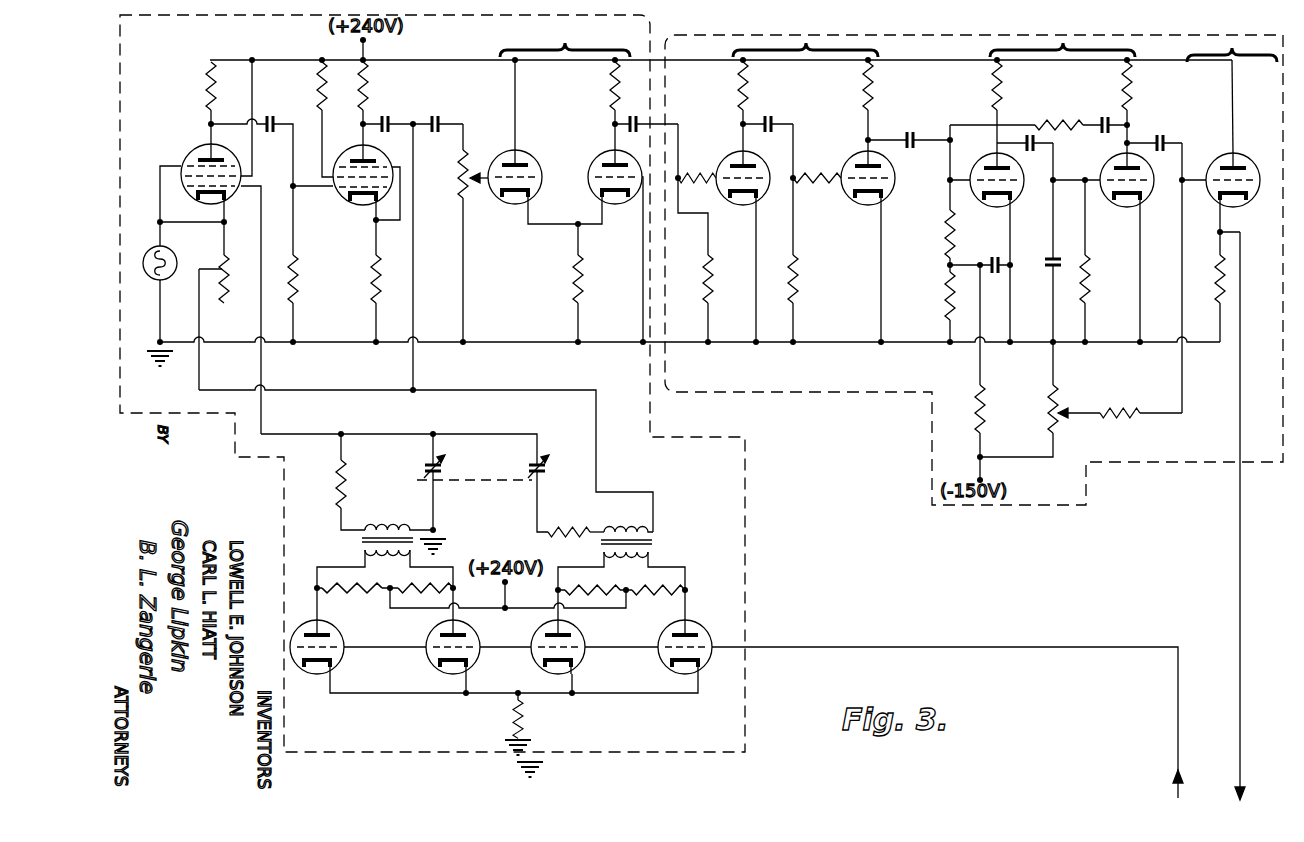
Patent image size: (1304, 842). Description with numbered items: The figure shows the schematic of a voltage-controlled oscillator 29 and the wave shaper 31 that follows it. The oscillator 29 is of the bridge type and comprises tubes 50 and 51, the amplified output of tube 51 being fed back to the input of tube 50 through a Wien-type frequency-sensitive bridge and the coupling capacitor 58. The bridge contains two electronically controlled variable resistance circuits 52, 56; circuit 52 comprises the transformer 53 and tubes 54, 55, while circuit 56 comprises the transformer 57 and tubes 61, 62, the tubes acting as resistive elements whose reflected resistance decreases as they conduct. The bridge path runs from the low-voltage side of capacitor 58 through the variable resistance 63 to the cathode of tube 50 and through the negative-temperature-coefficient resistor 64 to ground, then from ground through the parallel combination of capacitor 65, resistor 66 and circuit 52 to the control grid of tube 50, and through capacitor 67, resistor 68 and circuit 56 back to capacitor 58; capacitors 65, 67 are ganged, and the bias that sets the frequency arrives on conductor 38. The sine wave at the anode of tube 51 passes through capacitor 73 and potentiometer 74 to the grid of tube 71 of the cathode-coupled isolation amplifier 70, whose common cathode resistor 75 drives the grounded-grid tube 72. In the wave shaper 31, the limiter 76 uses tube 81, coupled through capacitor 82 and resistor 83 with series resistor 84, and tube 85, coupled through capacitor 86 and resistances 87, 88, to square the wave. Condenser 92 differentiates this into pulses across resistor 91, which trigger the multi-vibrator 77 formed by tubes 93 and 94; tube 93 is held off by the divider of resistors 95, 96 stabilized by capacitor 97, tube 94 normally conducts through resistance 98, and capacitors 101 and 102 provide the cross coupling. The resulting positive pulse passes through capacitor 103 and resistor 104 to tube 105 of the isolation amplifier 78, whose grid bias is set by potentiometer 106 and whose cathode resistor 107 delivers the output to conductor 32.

The oscillator 29 is at (750, 552).
The wave shaper 31 is at (1086, 508).
The conductor 32 is at (1238, 742).
The conductor 38 is at (1176, 760).
The tube 50 is at (188, 158).
The tube 51 is at (352, 204).
The circuit 52 is at (385, 578).
The transformer 53 is at (360, 548).
The tube 54 is at (338, 664).
The tube 55 is at (440, 668).
The circuit 56 is at (621, 579).
The transformer 57 is at (652, 546).
The coupling capacitor 58 is at (386, 120).
The tube 61 is at (574, 664).
The tube 62 is at (664, 648).
The resistance 63 is at (230, 268).
The negative-temperature-coefficient resistor 64 is at (148, 258).
The capacitor 65 is at (424, 474).
The resistor 66 is at (344, 484).
The capacitor 67 is at (530, 478).
The resistor 68 is at (574, 532).
The isolation amplifier 70 is at (565, 39).
The tube 71 is at (530, 166).
The tube 72 is at (598, 164).
The capacitor 73 is at (440, 122).
The potentiometer 74 is at (468, 164).
The cathode resistor 75 is at (572, 286).
The limiter 76 is at (805, 35).
The multi-vibrator 77 is at (1062, 35).
The isolation amplifier 78 is at (1232, 39).
The tube 81 is at (728, 158).
The capacitor 82 is at (636, 122).
The resistor 83 is at (712, 306).
The resistor 84 is at (692, 168).
The tube 85 is at (854, 158).
The capacitor 86 is at (770, 124).
The resistance 87 is at (798, 306).
The resistance 88 is at (834, 174).
The resistor 91 is at (942, 248).
The coupling condenser 92 is at (914, 138).
The tube 93 is at (1012, 208).
The tube 94 is at (1122, 208).
The resistor 95 is at (986, 432).
The resistor 96 is at (944, 302).
The capacitor 97 is at (994, 258).
The resistance 98 is at (1088, 292).
The coupling capacitor 101 is at (1040, 150).
The capacitor 102 is at (1096, 120).
The capacitor 103 is at (1164, 138).
The resistor 104 is at (1132, 412).
The tube 105 is at (1256, 162).
The potentiometer 106 is at (1080, 392).
The cathode resistor 107 is at (1216, 272).